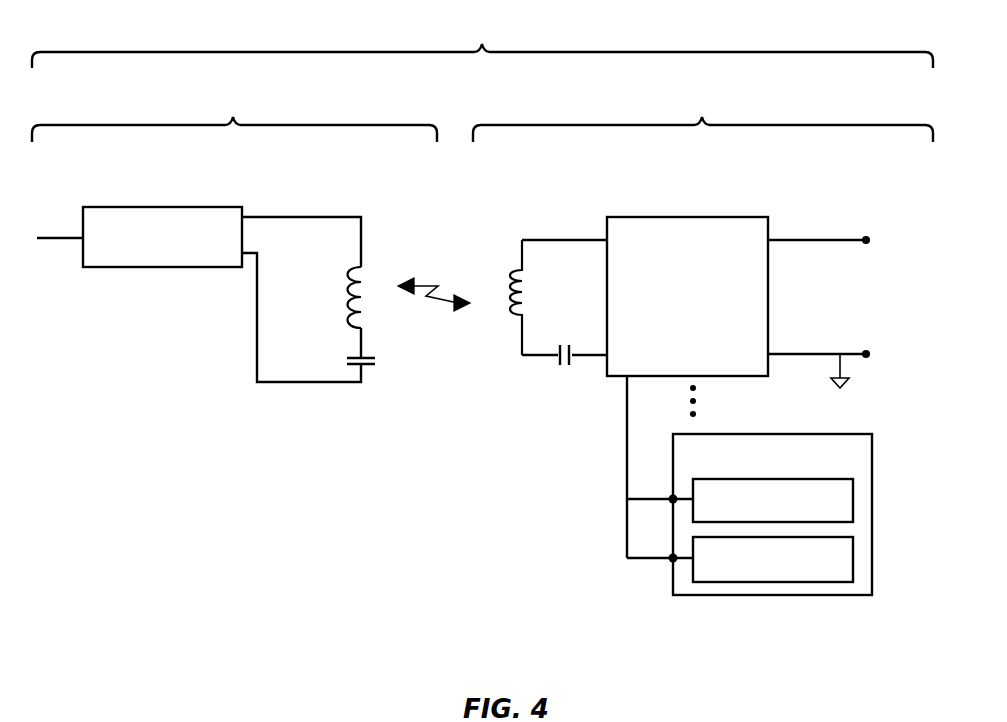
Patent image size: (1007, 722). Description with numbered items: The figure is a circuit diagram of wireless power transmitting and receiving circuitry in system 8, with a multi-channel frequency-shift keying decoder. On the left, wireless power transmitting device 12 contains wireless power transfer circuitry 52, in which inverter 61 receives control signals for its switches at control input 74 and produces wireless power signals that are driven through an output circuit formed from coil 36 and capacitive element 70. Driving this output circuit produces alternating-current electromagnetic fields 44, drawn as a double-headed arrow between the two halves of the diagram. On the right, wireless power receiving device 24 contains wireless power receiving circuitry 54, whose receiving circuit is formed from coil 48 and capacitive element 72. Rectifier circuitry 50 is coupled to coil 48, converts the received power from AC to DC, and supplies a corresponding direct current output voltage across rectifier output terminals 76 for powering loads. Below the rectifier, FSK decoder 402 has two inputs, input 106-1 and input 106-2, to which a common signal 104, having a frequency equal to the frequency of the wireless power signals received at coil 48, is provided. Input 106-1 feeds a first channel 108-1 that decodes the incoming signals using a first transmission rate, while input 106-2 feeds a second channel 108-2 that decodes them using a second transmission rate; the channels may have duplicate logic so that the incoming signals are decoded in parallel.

The system 8 is at (482, 45).
The wireless power transmitting device 12 is at (234, 118).
The wireless power receiving device 24 is at (703, 118).
The control input 74 is at (54, 236).
The inverter 61 is at (165, 207).
The coil 36 is at (369, 265).
The capacitive element 70 is at (379, 361).
The wireless power transfer circuitry 52 is at (205, 372).
The alternating-current electromagnetic fields 44 is at (442, 304).
The coil 48 is at (514, 320).
The capacitive element 72 is at (565, 372).
The rectifier circuitry 50 is at (684, 217).
The rectifier output terminals 76 is at (869, 243).
The wireless power receiving circuitry 54 is at (606, 449).
The FSK decoder 402 is at (873, 445).
The first channel 108-1 is at (847, 502).
The second channel 108-2 is at (847, 560).
The common signal 104 is at (625, 528).
The input 106-1 is at (671, 502).
The input 106-2 is at (671, 561).